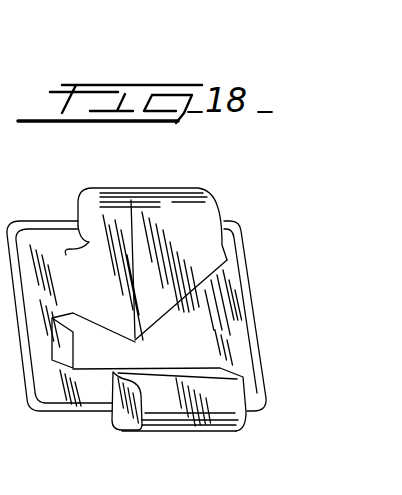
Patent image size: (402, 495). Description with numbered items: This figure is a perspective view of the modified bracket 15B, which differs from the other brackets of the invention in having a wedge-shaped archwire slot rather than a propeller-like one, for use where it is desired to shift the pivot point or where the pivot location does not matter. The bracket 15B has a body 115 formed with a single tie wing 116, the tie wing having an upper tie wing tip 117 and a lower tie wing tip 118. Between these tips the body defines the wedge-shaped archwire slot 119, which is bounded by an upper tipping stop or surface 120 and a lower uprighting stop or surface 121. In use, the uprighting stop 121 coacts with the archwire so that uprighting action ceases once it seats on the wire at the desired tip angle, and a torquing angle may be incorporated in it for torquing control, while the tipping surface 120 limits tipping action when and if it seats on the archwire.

The modified bracket 15B is at (208, 187).
The body 115 is at (71, 270).
The tie wing 116 is at (201, 410).
The upper tie wing tip 117 is at (148, 207).
The lower tie wing tip 118 is at (177, 416).
The wedge-shaped archwire slot 119 is at (133, 360).
The upper tipping stop 120 is at (181, 308).
The lower uprighting stop 121 is at (193, 377).